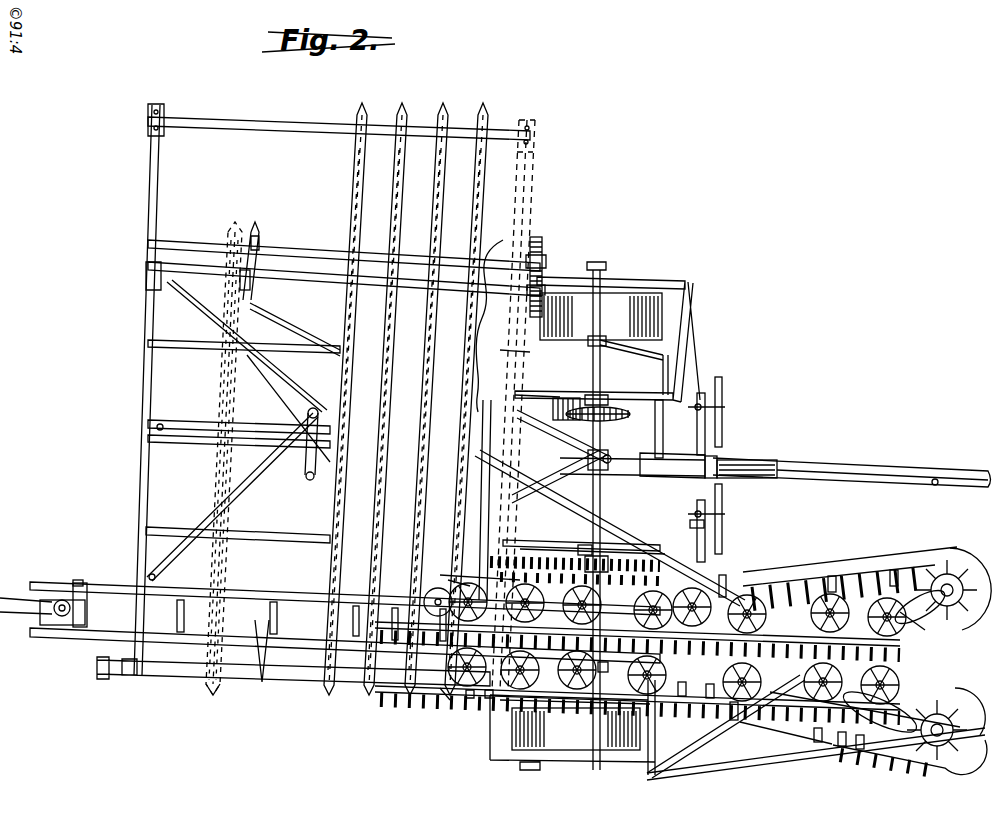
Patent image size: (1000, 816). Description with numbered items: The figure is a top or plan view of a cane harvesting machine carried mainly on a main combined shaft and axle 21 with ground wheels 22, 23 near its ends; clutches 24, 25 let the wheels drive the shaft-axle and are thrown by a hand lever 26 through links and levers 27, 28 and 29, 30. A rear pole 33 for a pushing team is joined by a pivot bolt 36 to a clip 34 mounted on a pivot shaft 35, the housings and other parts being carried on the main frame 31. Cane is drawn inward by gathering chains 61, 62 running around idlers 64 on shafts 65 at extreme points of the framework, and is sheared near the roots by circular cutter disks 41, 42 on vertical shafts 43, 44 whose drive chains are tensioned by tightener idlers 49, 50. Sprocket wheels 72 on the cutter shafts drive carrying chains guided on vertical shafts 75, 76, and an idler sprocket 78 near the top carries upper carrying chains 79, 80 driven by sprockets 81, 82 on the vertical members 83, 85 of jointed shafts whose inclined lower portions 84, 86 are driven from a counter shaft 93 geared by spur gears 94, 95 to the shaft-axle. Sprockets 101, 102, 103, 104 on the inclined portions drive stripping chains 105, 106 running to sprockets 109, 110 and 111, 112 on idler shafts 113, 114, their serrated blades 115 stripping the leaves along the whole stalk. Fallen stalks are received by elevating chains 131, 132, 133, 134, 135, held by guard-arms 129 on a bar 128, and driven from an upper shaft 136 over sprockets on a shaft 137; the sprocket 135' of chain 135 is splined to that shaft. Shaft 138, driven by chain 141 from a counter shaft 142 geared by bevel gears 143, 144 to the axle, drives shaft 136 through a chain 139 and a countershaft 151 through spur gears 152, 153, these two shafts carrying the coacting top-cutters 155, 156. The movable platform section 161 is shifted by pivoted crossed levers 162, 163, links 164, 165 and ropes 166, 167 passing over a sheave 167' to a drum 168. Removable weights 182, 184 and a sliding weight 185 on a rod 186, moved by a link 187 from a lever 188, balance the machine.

The main combined shaft and axle 21 is at (598, 275).
The ground wheel 22 is at (640, 292).
The ground wheel 23 is at (510, 738).
The clutch 24 is at (590, 340).
The clutch 25 is at (545, 712).
The hand lever 26 is at (658, 424).
The link 27 is at (660, 372).
The lever 28 is at (635, 352).
The link 29 is at (640, 538).
The lever 30 is at (700, 722).
The main frame 31 is at (146, 372).
The rear pole 33 is at (857, 466).
The clip 34 is at (72, 622).
The pivot shaft 35 is at (84, 583).
The pivot bolt 36 is at (62, 598).
The circular cutter disk 41 is at (744, 590).
The circular cutter disk 42 is at (710, 698).
The vertical cutter shaft 43 is at (765, 590).
The vertical cutter shaft 44 is at (752, 715).
The tightener idler 49 is at (700, 530).
The tightener idler 50 is at (712, 728).
The gathering chain 61 is at (898, 568).
The gathering chain 62 is at (912, 750).
The idler 64 is at (958, 560).
The shaft 65 is at (940, 573).
The sprocket wheel 72 is at (636, 552).
The vertical shaft 75 is at (690, 590).
The vertical shaft 76 is at (682, 695).
The idler sprocket wheel 78 is at (645, 668).
The carrying chain 79 is at (618, 626).
The carrying chain 80 is at (604, 671).
The sprocket wheel 81 is at (446, 598).
The sprocket wheel 82 is at (438, 688).
The vertical shaft member 83 is at (448, 580).
The inclined shaft portion 84 is at (510, 560).
The vertical shaft member 85 is at (448, 700).
The inclined shaft portion 86 is at (489, 695).
The counter shaft 93 is at (565, 557).
The spur gear 94 is at (584, 545).
The spur gear 95 is at (605, 556).
The sprocket wheel 101 is at (478, 580).
The sprocket wheel 102 is at (558, 590).
The sprocket wheel 103 is at (470, 695).
The sprocket wheel 104 is at (560, 660).
The stripping chain 105 is at (803, 580).
The stripping chain 106 is at (788, 740).
The sprocket wheel 109 is at (833, 578).
The sprocket wheel 110 is at (818, 742).
The sprocket wheel 111 is at (895, 572).
The sprocket wheel 112 is at (858, 748).
The idler shaft 113 is at (866, 575).
The idler shaft 114 is at (840, 745).
The stripping blade 115 is at (722, 580).
The bar 128 is at (254, 640).
The guard-arm 129 is at (176, 630).
The elevating chain 131 is at (477, 194).
The elevating chain 132 is at (439, 196).
The elevating chain 133 is at (397, 196).
The elevating chain 134 is at (356, 188).
The elevating chain 135 is at (206, 458).
The sprocket 135' is at (192, 696).
The upper shaft 136 is at (297, 122).
The shaft 137 is at (262, 682).
The shaft 138 is at (212, 244).
The sprocket chain 139 is at (530, 212).
The sprocket chain 141 is at (512, 356).
The counter shaft 142 is at (528, 395).
The bevel gear 143 is at (553, 407).
The bevel gear 144 is at (602, 416).
The countershaft 151 is at (146, 268).
The spur gear 152 is at (545, 290).
The spur gear 153 is at (545, 240).
The cutter 155 is at (252, 290).
The cutter 156 is at (259, 234).
The movable platform section 161 is at (224, 332).
The pivoted crossed lever 162 is at (262, 500).
The pivoted crossed lever 163 is at (270, 388).
The link 164 is at (310, 478).
The link 165 is at (315, 408).
The rope 166 is at (560, 469).
The rope 167 is at (239, 435).
The sheave 167' is at (239, 409).
The drum 168 is at (522, 430).
The removable weight 182 is at (921, 702).
The removable weight 184 is at (920, 627).
The sliding weight 185 is at (758, 480).
The rod 186 is at (792, 462).
The link 187 is at (714, 460).
The lever 188 is at (650, 452).